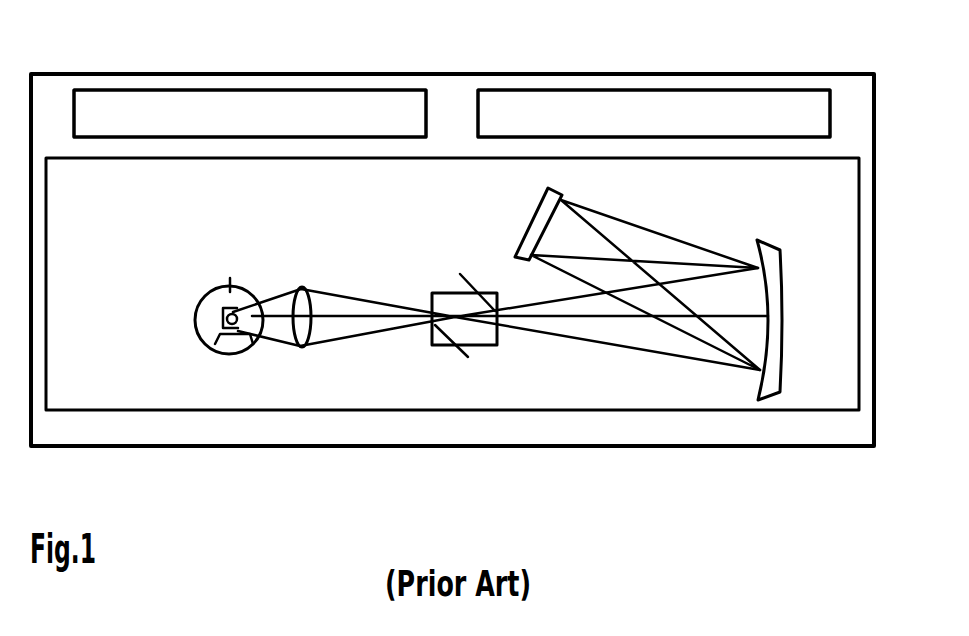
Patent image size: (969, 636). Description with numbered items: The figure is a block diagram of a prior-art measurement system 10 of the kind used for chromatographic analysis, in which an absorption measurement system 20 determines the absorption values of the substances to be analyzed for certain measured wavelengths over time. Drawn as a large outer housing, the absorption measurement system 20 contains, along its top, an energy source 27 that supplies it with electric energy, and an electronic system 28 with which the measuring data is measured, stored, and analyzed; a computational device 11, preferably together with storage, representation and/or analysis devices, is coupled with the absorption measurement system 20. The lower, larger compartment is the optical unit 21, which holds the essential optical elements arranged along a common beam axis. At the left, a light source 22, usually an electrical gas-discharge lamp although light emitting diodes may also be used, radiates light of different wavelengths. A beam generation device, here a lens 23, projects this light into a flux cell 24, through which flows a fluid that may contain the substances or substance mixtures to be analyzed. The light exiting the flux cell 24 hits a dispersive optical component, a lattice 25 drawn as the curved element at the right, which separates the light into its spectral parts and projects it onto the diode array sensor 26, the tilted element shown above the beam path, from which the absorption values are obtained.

The measurement system 10 is at (344, 466).
The absorption measurement system 20 is at (56, 94).
The energy source 27 is at (372, 100).
The computational device 11 is at (545, 112).
The electronic system 28 is at (663, 110).
The optical unit 21 is at (108, 388).
The light source 22 is at (205, 350).
The lens 23 is at (298, 348).
The flux cell 24 is at (465, 338).
The diode array sensor 26 is at (535, 263).
The lattice 25 is at (763, 400).